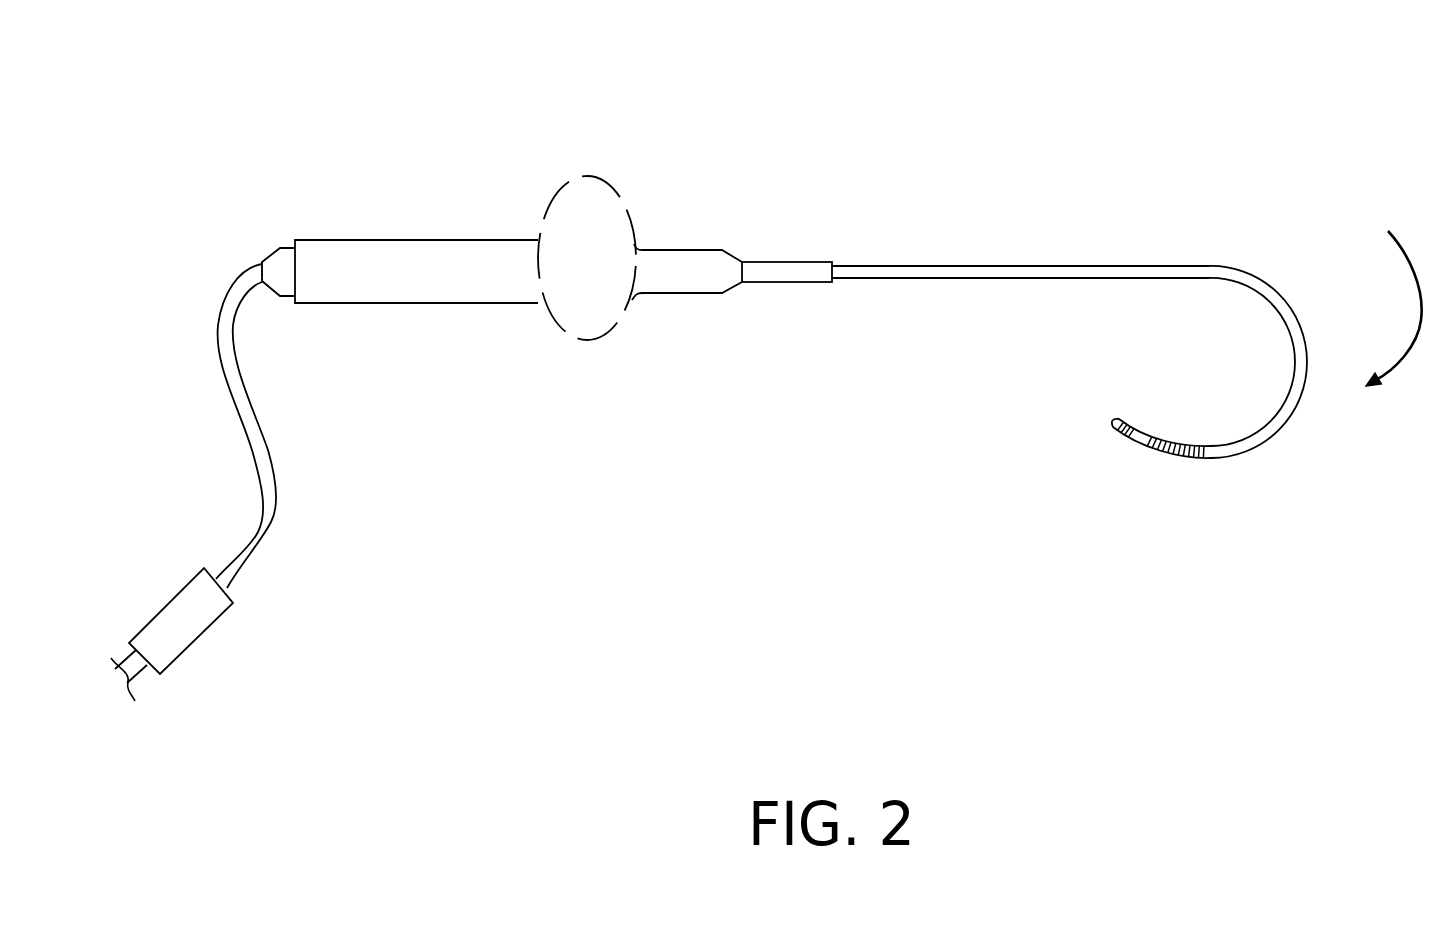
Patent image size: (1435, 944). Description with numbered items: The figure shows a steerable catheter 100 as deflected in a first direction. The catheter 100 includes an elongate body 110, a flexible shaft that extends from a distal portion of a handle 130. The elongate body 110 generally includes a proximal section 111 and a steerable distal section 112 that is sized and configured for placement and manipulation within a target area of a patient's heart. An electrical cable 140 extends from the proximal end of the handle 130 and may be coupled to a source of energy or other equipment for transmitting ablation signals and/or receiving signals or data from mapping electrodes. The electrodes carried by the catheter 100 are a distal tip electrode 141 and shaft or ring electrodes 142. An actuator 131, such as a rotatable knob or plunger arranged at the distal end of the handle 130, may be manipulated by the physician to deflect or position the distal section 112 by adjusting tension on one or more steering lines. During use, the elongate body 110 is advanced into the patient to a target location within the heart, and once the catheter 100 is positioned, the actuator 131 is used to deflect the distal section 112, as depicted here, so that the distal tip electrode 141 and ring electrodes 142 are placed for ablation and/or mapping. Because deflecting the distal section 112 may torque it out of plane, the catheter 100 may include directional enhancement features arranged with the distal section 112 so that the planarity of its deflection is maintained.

The catheter 100 is at (817, 113).
The elongate body 110 is at (915, 266).
The proximal section 111 is at (1001, 266).
The distal section 112 is at (1225, 451).
The handle 130 is at (388, 252).
The actuator 131 is at (621, 319).
The electrical cable 140 is at (259, 522).
The distal tip electrode 141 is at (1108, 426).
The ring electrodes 142 is at (1148, 453).